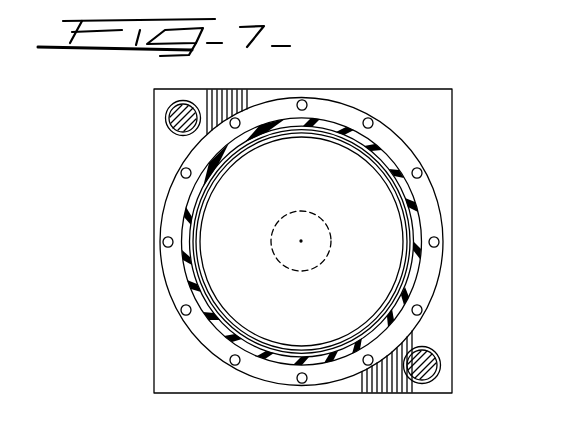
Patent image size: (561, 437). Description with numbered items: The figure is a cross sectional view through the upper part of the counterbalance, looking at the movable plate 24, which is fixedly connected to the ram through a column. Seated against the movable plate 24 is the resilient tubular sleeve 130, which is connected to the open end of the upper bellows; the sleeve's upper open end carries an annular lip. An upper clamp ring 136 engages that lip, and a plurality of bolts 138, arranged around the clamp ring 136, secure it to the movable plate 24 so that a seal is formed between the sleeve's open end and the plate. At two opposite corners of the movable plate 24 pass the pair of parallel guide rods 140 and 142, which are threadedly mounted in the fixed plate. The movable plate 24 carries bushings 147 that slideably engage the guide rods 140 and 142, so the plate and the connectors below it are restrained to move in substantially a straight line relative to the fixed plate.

The movable plate 24 is at (435, 118).
The resilient tubular sleeve 130 is at (403, 183).
The upper clamp ring 136 is at (422, 199).
The bolts 138 is at (181, 304).
The guide rod 140 is at (175, 122).
The guide rod 142 is at (438, 358).
The bushings 147 is at (196, 121).